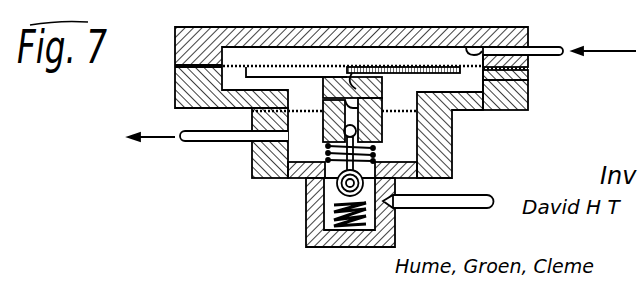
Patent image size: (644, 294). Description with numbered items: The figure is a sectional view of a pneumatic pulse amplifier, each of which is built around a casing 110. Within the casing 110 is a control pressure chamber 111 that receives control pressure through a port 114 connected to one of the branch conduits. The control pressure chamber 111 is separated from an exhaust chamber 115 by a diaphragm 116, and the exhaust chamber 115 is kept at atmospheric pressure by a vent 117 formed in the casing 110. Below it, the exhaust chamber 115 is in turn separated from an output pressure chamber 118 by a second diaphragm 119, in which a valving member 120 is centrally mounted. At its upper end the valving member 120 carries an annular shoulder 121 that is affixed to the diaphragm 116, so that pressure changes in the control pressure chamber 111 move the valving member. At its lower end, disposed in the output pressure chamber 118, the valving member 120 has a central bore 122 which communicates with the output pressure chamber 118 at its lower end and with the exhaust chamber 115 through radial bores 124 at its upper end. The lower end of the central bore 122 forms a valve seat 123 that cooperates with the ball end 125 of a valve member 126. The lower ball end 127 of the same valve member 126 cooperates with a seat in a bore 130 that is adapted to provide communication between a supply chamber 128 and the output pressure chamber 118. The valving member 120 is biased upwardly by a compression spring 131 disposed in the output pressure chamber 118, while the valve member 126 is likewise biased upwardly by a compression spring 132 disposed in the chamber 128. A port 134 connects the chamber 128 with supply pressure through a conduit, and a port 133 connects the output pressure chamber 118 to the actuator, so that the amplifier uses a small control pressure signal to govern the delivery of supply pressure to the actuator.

The casing 110 is at (511, 34).
The control pressure chamber 111 is at (243, 45).
The port 114 is at (469, 47).
The exhaust chamber 115 is at (528, 99).
The diaphragm 116 is at (180, 85).
The vent 117 is at (486, 80).
The output pressure chamber 118 is at (410, 152).
The diaphragm 119 is at (258, 119).
The valving member 120 is at (353, 72).
The annular shoulder 121 is at (271, 67).
The central bore 122 is at (360, 104).
The valve seat 123 is at (325, 118).
The radial bores 124 is at (333, 73).
The ball end 125 is at (360, 132).
The valve member 126 is at (338, 184).
The lower ball end 127 is at (336, 195).
The chamber 128 is at (354, 248).
The bore 130 is at (397, 180).
The compression spring 131 is at (277, 172).
The compression spring 132 is at (324, 228).
The port 133 is at (256, 134).
The port 134 is at (396, 202).